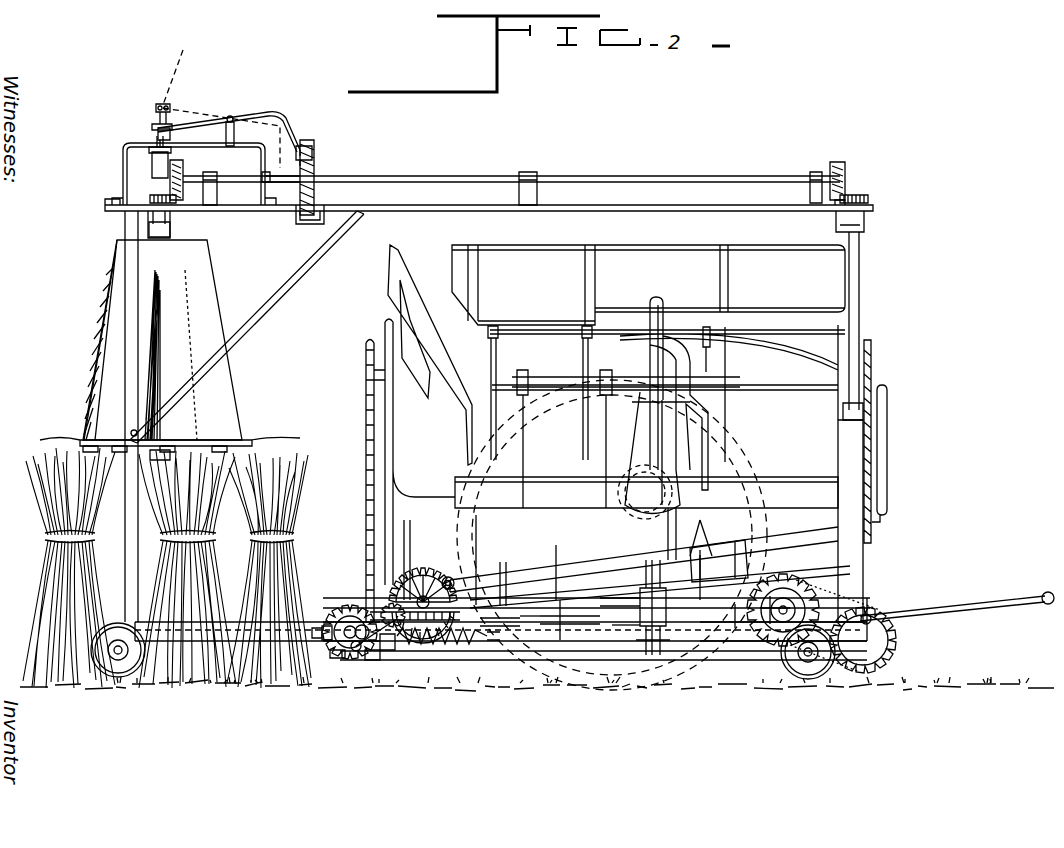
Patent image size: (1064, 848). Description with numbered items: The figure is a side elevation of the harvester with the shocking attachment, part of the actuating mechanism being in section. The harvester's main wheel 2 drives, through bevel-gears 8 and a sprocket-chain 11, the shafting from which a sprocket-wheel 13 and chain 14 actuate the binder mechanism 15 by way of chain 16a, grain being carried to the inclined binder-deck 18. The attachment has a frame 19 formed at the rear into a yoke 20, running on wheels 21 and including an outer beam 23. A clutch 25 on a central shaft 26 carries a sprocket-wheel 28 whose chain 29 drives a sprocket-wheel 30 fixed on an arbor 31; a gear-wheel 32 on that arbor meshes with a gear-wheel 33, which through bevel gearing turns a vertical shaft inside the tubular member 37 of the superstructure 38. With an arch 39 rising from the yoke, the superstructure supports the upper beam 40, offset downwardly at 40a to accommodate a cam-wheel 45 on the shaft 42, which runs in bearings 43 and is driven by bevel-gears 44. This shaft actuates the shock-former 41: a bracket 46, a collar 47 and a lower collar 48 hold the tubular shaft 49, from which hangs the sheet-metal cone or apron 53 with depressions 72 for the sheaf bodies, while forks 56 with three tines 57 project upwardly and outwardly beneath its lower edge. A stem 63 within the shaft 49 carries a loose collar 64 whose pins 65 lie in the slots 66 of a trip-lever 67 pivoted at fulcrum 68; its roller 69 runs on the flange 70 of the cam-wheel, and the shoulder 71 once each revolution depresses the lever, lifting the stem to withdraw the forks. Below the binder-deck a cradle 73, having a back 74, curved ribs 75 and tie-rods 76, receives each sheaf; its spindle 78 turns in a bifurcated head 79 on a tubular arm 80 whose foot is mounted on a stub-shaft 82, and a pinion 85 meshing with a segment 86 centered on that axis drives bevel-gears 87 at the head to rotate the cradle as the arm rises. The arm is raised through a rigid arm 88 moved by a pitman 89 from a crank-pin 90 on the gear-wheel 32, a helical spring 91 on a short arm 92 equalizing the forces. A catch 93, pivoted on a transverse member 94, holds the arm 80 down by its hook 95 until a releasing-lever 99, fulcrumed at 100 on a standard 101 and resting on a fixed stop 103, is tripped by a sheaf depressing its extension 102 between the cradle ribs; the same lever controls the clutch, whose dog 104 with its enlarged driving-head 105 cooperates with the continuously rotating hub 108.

The main wheel 2 is at (478, 522).
The bevel-gears 8 is at (420, 576).
The sprocket-chain 11 is at (358, 606).
The sprocket-wheel 13 is at (348, 612).
The chain 14 is at (366, 480).
The binder mechanism 15 is at (742, 385).
The chain 16a is at (873, 360).
The inclined binder-deck 18 is at (430, 355).
The frame 19 is at (740, 645).
The yoke 20 is at (210, 642).
The wheels 21 is at (118, 678).
The beam 23 is at (712, 662).
The clutch 25 is at (360, 656).
The central shaft 26 is at (330, 690).
The sprocket-wheel 28 is at (320, 680).
The chain 29 is at (538, 652).
The sprocket-wheel 30 is at (806, 594).
The arbor 31 is at (782, 615).
The gear-wheel 32 is at (805, 565).
The gear-wheel 33 is at (897, 650).
The tubular member 37 is at (860, 294).
The superstructure 38 is at (935, 454).
The arch 39 is at (132, 325).
The upper beam 40 is at (602, 212).
The downward offset of beam 40a is at (318, 222).
The shock-former 41 is at (96, 367).
The shaft 42 is at (608, 176).
The bearings 43 is at (214, 196).
The bevel-gears 44 is at (838, 163).
The cam-wheel 45 is at (314, 160).
The bracket 46 is at (123, 160).
The collar 47 is at (152, 160).
The collar 48 is at (149, 228).
The tubular guide or shaft 49 is at (170, 177).
The cone or apron 53 is at (118, 295).
The forks 56 is at (83, 450).
The tines 57 is at (80, 442).
The stem 63 is at (172, 134).
The loose collar 64 is at (156, 124).
The pins 65 is at (160, 104).
The slots 66 is at (72, 92).
The trip-lever 67 is at (232, 118).
The fulcrum 68 is at (233, 118).
The roller 69 is at (304, 146).
The flange 70 is at (322, 200).
The shoulder 71 is at (316, 172).
The depressions 72 is at (93, 393).
The cradle 73 is at (735, 560).
The back 74 is at (756, 562).
The transverse bands or ribs 75 is at (700, 566).
The tie-rods 76 is at (735, 540).
The short spindle 78 is at (670, 650).
The bifurcated head 79 is at (652, 656).
The tubular arm 80 is at (605, 652).
The stub-shaft 82 is at (394, 656).
The pinion 85 is at (430, 662).
The segment 86 is at (441, 568).
The bevel-gears 87 is at (700, 609).
The rigid arm 88 is at (450, 578).
The pitman 89 is at (546, 566).
The crank-pin 90 is at (822, 606).
The helical spring 91 is at (440, 662).
The short arm 92 is at (373, 662).
The catch 93 is at (534, 656).
The transverse member 94 is at (628, 656).
The hook 95 is at (604, 486).
The releasing-lever 99 is at (504, 564).
The fulcrum 100 is at (523, 486).
The standard 101 is at (558, 652).
The lateral extension 102 is at (676, 508).
The fixed stop 103 is at (450, 656).
The dog 104 is at (350, 622).
The enlarged driving-head 105 is at (400, 556).
The hub 108 is at (334, 690).